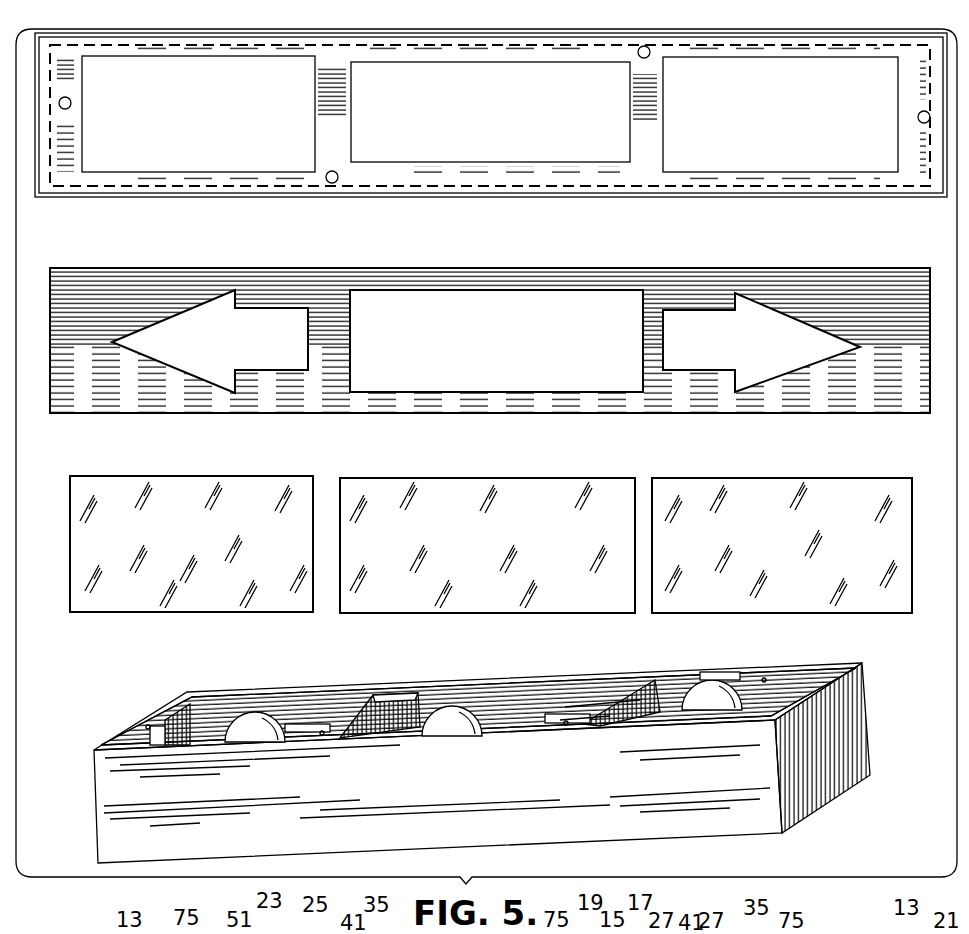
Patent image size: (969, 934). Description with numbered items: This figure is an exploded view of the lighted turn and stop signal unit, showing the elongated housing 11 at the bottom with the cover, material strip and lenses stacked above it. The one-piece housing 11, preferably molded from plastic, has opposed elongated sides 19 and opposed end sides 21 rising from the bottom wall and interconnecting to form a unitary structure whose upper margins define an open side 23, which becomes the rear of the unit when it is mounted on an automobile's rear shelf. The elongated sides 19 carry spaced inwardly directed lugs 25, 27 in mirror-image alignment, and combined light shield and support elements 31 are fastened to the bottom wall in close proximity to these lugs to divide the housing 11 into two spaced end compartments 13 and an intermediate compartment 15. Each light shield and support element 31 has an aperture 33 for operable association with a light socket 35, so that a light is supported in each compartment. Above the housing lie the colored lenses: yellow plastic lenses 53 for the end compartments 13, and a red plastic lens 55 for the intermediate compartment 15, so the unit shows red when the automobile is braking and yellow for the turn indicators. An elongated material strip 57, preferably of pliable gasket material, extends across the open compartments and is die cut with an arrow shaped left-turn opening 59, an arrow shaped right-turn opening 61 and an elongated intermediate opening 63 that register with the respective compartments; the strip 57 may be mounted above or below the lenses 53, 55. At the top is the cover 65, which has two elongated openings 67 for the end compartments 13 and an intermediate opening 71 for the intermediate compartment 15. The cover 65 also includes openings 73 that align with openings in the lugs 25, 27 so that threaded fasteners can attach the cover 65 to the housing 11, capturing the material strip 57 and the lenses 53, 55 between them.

The elongated housing 11 is at (878, 724).
The end compartment 13 is at (308, 710).
The intermediate compartment 15 is at (577, 700).
The elongated side 19 is at (512, 684).
The end side 21 is at (137, 728).
The open side 23 is at (226, 707).
The inwardly directed lug 25 is at (380, 696).
The inwardly directed lug 27 is at (630, 688).
The combined light shield and support element 31 is at (345, 722).
The aperture 33 is at (650, 47).
The light socket 35 is at (300, 724).
The yellow plastic lens 53 is at (232, 495).
The red plastic lens 55 is at (538, 505).
The elongated material strip 57 is at (323, 300).
The arrow shaped left-turn opening 59 is at (196, 341).
The arrow shaped right-turn opening 61 is at (808, 332).
The elongated intermediate opening 63 is at (507, 336).
The cover 65 is at (446, 32).
The elongated opening 67 is at (229, 110).
The intermediate opening 71 is at (522, 115).
The opening 73 is at (72, 101).